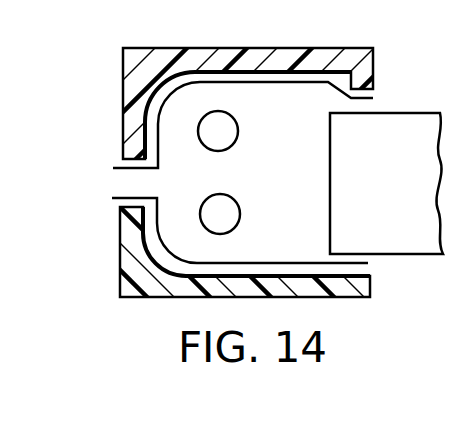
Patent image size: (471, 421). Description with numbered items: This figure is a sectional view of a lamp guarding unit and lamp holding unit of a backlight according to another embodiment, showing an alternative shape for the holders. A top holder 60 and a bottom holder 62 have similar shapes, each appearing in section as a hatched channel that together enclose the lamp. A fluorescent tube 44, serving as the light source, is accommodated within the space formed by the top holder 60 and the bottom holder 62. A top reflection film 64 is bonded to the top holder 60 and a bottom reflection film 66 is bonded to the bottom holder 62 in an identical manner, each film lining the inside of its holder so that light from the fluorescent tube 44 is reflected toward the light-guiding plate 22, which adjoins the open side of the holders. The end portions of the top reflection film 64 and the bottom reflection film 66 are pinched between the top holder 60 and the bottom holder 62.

The light-guiding plate 22 is at (408, 122).
The fluorescent tube 44 is at (230, 200).
The top holder 60 is at (123, 90).
The bottom holder 62 is at (120, 268).
The top reflection film 64 is at (288, 82).
The bottom reflection film 66 is at (255, 262).